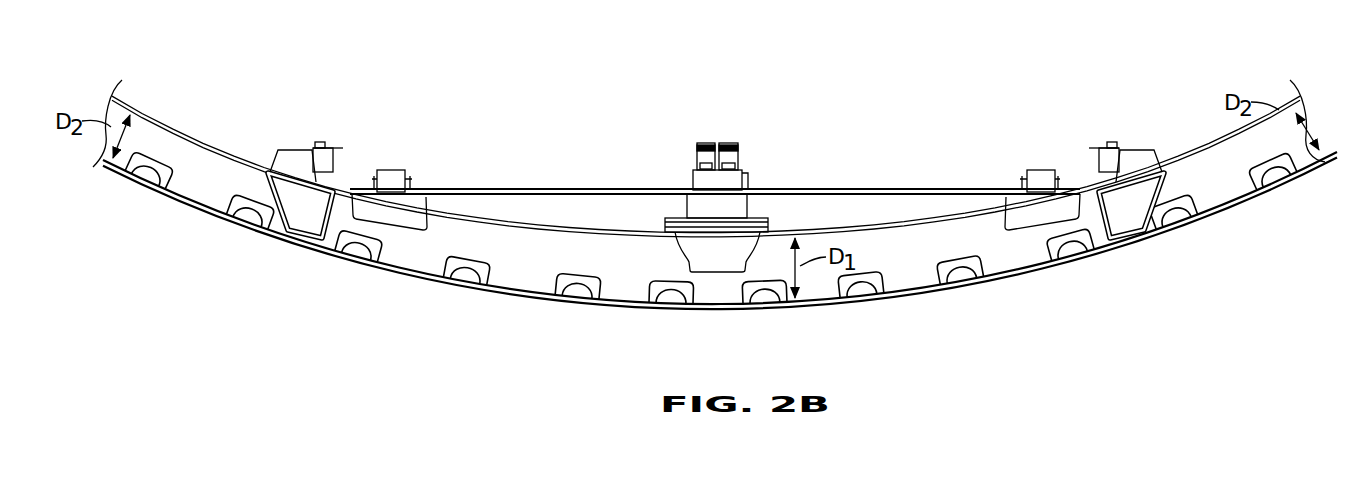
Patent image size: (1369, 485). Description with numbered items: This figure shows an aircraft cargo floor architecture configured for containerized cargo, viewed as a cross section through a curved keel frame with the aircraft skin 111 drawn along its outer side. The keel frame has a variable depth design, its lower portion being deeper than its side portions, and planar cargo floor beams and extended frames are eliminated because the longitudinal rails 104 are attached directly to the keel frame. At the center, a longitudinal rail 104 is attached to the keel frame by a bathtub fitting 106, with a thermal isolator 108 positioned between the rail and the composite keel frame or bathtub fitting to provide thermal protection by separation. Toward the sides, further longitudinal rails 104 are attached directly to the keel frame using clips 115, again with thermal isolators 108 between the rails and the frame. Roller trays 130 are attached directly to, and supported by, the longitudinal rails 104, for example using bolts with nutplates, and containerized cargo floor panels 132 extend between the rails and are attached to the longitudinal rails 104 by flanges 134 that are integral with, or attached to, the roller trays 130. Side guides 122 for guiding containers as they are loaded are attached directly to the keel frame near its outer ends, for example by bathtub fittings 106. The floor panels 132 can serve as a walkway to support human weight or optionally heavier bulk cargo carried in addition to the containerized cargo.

The longitudinal rail 104 is at (420, 189).
The bathtub fitting 106 is at (284, 190).
The thermal isolator 108 is at (338, 190).
The skin 111 is at (252, 240).
The clip 115 is at (408, 232).
The side guide 122 is at (321, 147).
The roller tray 130 is at (390, 171).
The containerized cargo floor panel 132 is at (515, 188).
The flange 134 is at (425, 206).